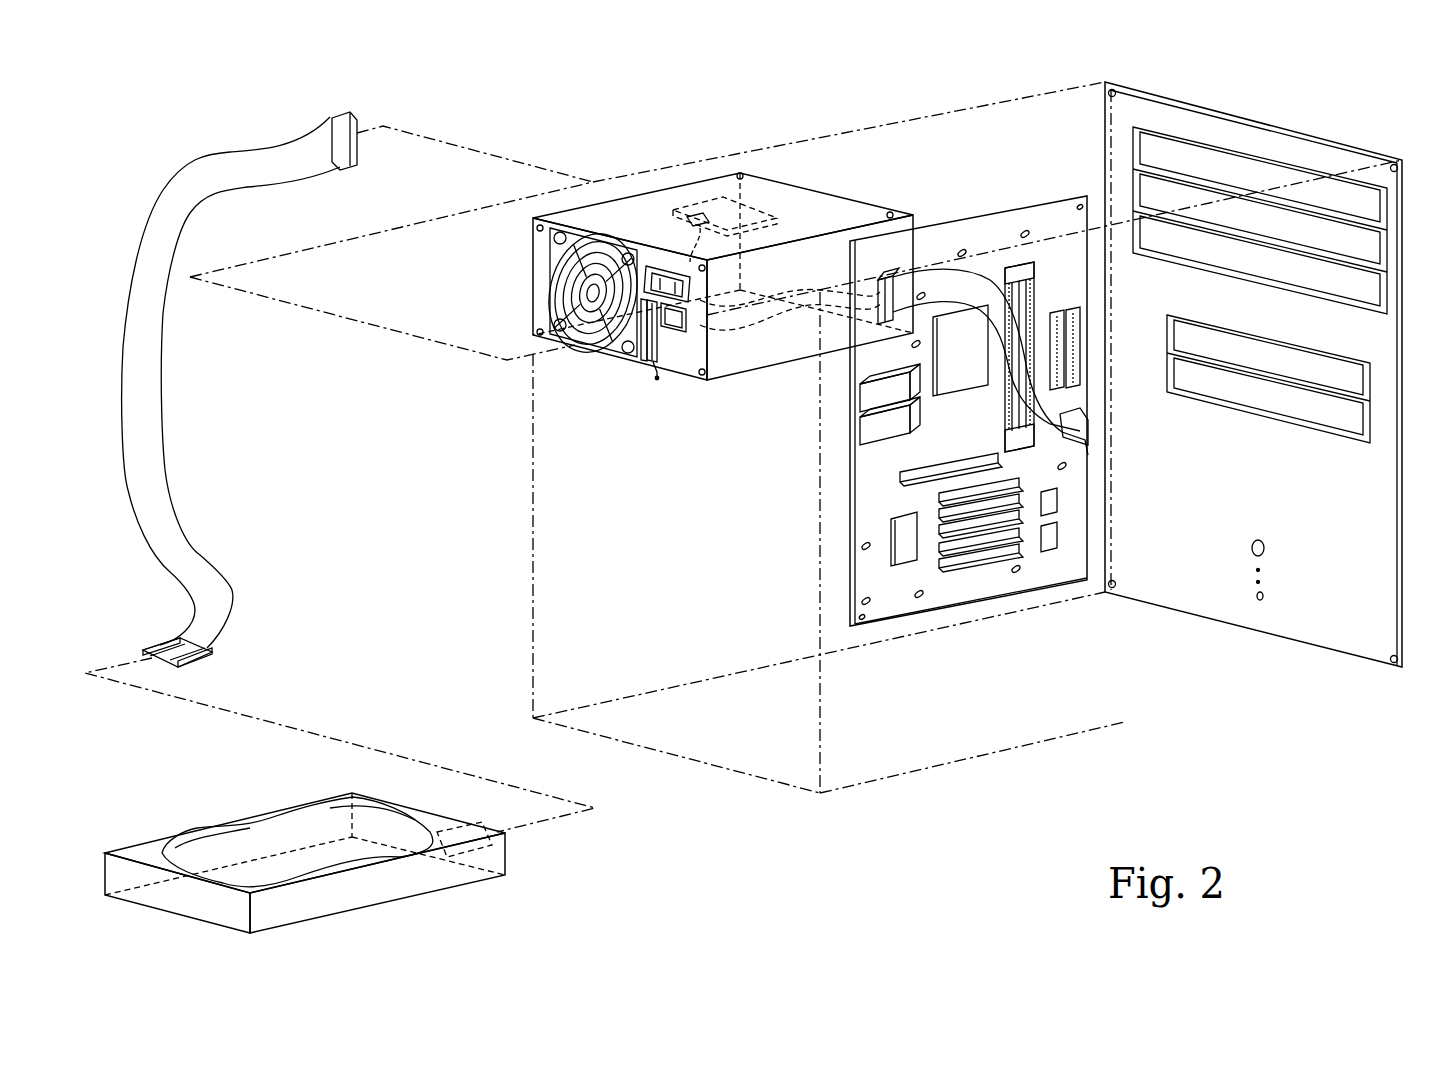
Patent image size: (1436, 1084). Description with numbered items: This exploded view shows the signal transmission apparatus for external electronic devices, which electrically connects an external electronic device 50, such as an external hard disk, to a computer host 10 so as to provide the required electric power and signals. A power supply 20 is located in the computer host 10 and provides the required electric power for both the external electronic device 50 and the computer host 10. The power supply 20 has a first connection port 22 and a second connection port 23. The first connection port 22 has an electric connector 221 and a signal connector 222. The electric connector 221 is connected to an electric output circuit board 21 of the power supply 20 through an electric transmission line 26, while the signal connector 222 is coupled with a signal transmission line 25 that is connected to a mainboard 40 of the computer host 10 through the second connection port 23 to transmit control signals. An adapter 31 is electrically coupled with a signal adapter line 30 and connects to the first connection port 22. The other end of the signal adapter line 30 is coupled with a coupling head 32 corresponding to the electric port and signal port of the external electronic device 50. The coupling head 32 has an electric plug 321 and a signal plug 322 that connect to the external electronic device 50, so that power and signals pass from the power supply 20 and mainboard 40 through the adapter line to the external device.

The computer host 10 is at (916, 126).
The power supply 20 is at (733, 287).
The electric output circuit board 21 is at (708, 202).
The first connection port 22 is at (657, 380).
The electric connector 221 is at (667, 330).
The signal connector 222 is at (641, 362).
The second connection port 23 is at (887, 284).
The signal transmission line 25 is at (975, 300).
The electric transmission line 26 is at (676, 274).
The signal adapter line 30 is at (175, 455).
The adapter 31 is at (340, 116).
The coupling head 32 is at (215, 660).
The electric plug 321 is at (152, 652).
The signal plug 322 is at (185, 666).
The mainboard 40 is at (1022, 598).
The external electronic device 50 is at (245, 816).